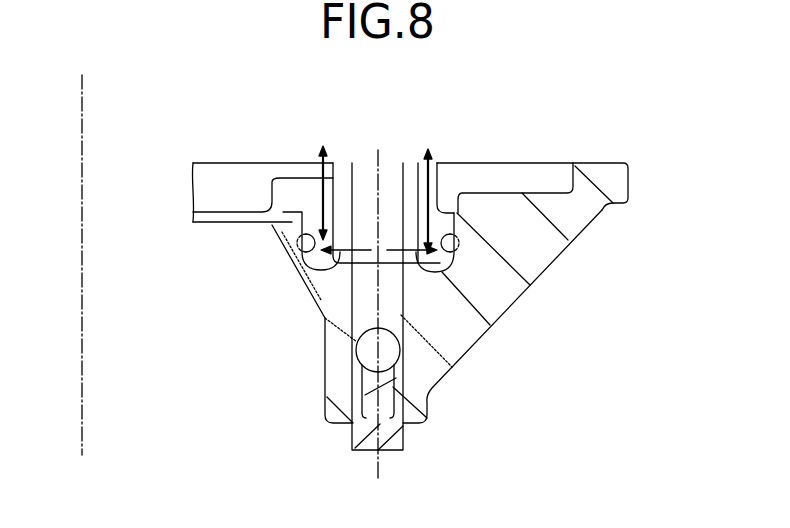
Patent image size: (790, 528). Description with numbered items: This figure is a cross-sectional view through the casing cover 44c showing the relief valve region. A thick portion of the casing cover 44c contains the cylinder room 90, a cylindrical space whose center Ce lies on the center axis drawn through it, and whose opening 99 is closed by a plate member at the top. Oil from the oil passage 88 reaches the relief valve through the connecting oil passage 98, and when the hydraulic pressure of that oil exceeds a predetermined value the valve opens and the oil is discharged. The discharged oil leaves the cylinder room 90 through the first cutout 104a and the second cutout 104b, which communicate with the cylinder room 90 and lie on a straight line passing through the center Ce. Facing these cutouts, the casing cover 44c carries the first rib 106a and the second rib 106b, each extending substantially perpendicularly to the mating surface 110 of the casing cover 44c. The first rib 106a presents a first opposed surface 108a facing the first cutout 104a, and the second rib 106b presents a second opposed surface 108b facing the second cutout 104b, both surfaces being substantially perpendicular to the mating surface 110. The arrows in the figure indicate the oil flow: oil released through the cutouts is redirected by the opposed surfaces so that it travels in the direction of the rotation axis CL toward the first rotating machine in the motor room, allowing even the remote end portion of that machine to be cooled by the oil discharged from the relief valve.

The casing cover 44c is at (277, 160).
The mating surface 110 is at (597, 163).
The opening 99 is at (391, 162).
The first cutout 104a is at (343, 172).
The second cutout 104b is at (413, 170).
The first rib 106a is at (295, 238).
The second rib 106b is at (463, 227).
The first opposed surface 108a is at (300, 256).
The second opposed surface 108b is at (453, 261).
The connecting oil passage 98 is at (478, 338).
The cylinder room 90 is at (347, 272).
The oil passage 88 is at (355, 367).
The rotation axis CL is at (84, 152).
The center of the cylinder room Ce is at (380, 467).